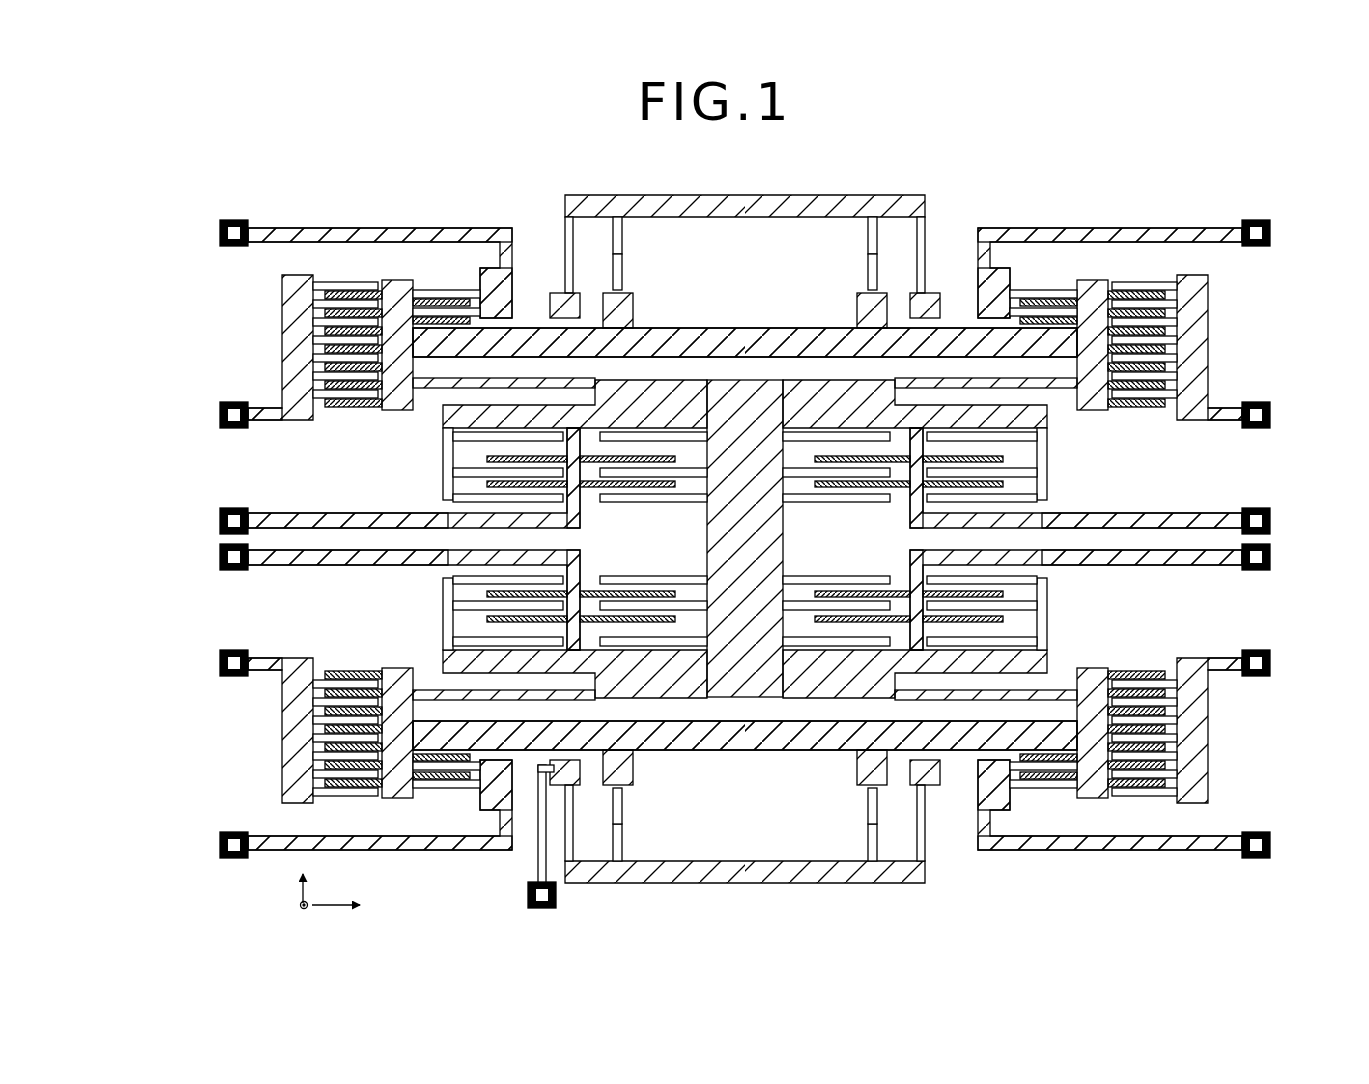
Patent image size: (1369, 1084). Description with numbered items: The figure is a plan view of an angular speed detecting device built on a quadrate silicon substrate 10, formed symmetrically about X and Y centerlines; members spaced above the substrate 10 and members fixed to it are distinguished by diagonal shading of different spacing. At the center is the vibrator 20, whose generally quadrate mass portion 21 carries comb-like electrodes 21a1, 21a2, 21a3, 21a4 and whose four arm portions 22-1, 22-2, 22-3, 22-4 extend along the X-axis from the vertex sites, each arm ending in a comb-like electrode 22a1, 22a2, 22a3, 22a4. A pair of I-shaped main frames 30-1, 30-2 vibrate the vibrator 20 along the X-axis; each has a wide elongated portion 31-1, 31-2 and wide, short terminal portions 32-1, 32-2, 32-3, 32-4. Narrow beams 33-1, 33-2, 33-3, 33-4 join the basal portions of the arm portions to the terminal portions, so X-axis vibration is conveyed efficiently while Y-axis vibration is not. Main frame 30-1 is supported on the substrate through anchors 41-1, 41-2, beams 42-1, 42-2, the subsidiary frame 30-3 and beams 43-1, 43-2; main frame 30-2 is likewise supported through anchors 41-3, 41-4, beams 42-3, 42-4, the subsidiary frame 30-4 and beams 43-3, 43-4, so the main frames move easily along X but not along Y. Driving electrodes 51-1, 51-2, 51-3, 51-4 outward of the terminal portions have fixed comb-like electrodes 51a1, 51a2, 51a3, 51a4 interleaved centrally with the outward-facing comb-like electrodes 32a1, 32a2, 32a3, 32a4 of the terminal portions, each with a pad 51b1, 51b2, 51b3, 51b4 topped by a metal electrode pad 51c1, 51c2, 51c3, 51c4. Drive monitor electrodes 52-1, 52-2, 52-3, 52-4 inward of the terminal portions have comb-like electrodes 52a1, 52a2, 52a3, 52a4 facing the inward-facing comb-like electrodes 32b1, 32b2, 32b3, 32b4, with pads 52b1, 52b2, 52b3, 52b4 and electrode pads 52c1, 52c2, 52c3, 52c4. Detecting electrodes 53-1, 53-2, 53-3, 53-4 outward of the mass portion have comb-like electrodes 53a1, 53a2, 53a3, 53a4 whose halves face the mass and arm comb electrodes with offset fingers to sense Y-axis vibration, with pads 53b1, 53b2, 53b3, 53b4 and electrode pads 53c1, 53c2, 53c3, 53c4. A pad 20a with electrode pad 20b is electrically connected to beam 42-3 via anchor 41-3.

The substrate 10 is at (740, 553).
The vibrator 20 is at (790, 543).
The pad 20a is at (528, 896).
The electrode pad 20b is at (556, 898).
The mass portion 21 is at (706, 550).
The comb-like electrode 21a1 is at (646, 465).
The comb-like electrode 21a2 is at (846, 465).
The comb-like electrode 21a3 is at (646, 614).
The comb-like electrode 21a4 is at (846, 614).
The arm portion 22-1 is at (446, 514).
The arm portion 22-2 is at (1046, 514).
The arm portion 22-3 is at (446, 564).
The arm portion 22-4 is at (1048, 564).
The comb-like electrode 22a1 is at (503, 465).
The comb-like electrode 22a2 is at (987, 465).
The comb-like electrode 22a3 is at (503, 614).
The comb-like electrode 22a4 is at (987, 614).
The main frame 30-1 is at (786, 326).
The main frame 30-2 is at (782, 754).
The subsidiary frame 30-3 is at (724, 224).
The subsidiary frame 30-4 is at (746, 856).
The elongated portion 31-1 is at (700, 328).
The elongated portion 31-2 is at (704, 750).
The terminal portion 32-1 is at (410, 404).
The terminal portion 32-2 is at (1084, 414).
The terminal portion 32-3 is at (410, 670).
The terminal portion 32-4 is at (1085, 670).
The comb-like electrode 32a1 is at (382, 394).
The comb-like electrode 32a2 is at (1108, 402).
The comb-like electrode 32a3 is at (383, 688).
The comb-like electrode 32a4 is at (1108, 690).
The comb-like electrode 32b1 is at (420, 286).
The comb-like electrode 32b2 is at (1070, 286).
The comb-like electrode 32b3 is at (420, 792).
The comb-like electrode 32b4 is at (1070, 792).
The beam 33-1 is at (430, 390).
The beam 33-2 is at (1062, 390).
The beam 33-3 is at (428, 690).
The beam 33-4 is at (1060, 690).
The anchor 41-1 is at (606, 296).
The anchor 41-2 is at (862, 297).
The anchor 41-3 is at (618, 798).
The anchor 41-4 is at (870, 798).
The beam 42-1 is at (622, 228).
The beam 42-2 is at (868, 262).
The beam 42-3 is at (620, 845).
The beam 42-4 is at (872, 822).
The beam 43-1 is at (622, 264).
The beam 43-2 is at (868, 230).
The beam 43-3 is at (623, 822).
The beam 43-4 is at (870, 846).
The driving electrode 51-1 is at (296, 422).
The driving electrode 51-2 is at (1176, 446).
The driving electrode 51-3 is at (305, 655).
The driving electrode 51-4 is at (1172, 655).
The comb-like electrode 51a1 is at (330, 288).
The comb-like electrode 51a2 is at (1160, 288).
The comb-like electrode 51a3 is at (330, 792).
The comb-like electrode 51a4 is at (1160, 790).
The pad 51b1 is at (240, 404).
The pad 51b2 is at (1252, 402).
The pad 51b3 is at (238, 676).
The pad 51b4 is at (1252, 676).
The electrode pad 51c1 is at (230, 430).
The electrode pad 51c2 is at (1260, 404).
The electrode pad 51c3 is at (232, 652).
The electrode pad 51c4 is at (1258, 654).
The drive monitor electrode 52-1 is at (520, 240).
The drive monitor electrode 52-2 is at (980, 242).
The drive monitor electrode 52-3 is at (520, 836).
The drive monitor electrode 52-4 is at (980, 842).
The comb-like electrode 52a1 is at (486, 300).
The comb-like electrode 52a2 is at (1008, 300).
The comb-like electrode 52a3 is at (486, 780).
The comb-like electrode 52a4 is at (1008, 780).
The pad 52b1 is at (240, 222).
The pad 52b2 is at (1250, 222).
The pad 52b3 is at (238, 858).
The pad 52b4 is at (1256, 858).
The electrode pad 52c1 is at (240, 250).
The electrode pad 52c2 is at (1254, 250).
The electrode pad 52c3 is at (238, 830).
The electrode pad 52c4 is at (1252, 830).
The detecting electrode 53-1 is at (590, 513).
The detecting electrode 53-2 is at (797, 513).
The detecting electrode 53-3 is at (592, 567).
The detecting electrode 53-4 is at (797, 567).
The comb-like electrode 53a1 is at (559, 457).
The comb-like electrode 53a2 is at (937, 457).
The comb-like electrode 53a3 is at (555, 622).
The comb-like electrode 53a4 is at (940, 622).
The pad 53b1 is at (302, 513).
The pad 53b2 is at (1190, 514).
The pad 53b3 is at (300, 566).
The pad 53b4 is at (1190, 566).
The electrode pad 53c1 is at (232, 512).
The electrode pad 53c2 is at (1258, 512).
The electrode pad 53c3 is at (232, 570).
The electrode pad 53c4 is at (1258, 570).